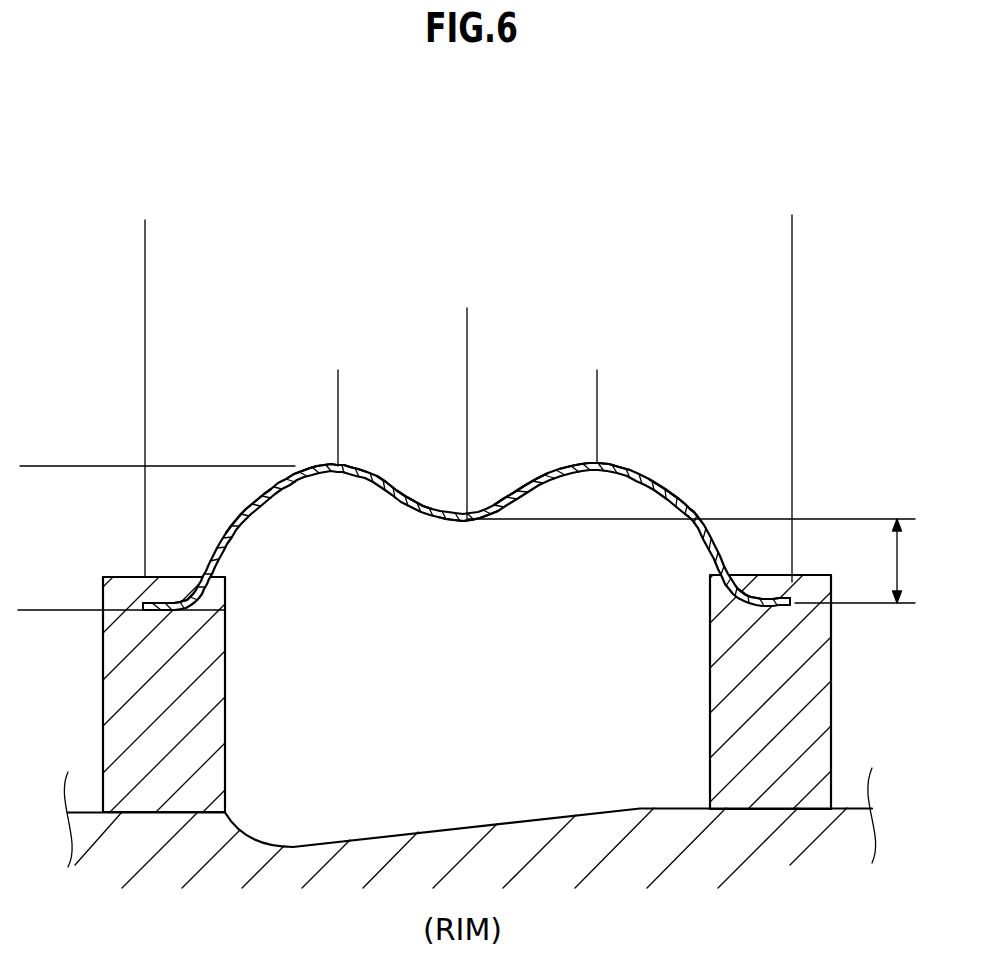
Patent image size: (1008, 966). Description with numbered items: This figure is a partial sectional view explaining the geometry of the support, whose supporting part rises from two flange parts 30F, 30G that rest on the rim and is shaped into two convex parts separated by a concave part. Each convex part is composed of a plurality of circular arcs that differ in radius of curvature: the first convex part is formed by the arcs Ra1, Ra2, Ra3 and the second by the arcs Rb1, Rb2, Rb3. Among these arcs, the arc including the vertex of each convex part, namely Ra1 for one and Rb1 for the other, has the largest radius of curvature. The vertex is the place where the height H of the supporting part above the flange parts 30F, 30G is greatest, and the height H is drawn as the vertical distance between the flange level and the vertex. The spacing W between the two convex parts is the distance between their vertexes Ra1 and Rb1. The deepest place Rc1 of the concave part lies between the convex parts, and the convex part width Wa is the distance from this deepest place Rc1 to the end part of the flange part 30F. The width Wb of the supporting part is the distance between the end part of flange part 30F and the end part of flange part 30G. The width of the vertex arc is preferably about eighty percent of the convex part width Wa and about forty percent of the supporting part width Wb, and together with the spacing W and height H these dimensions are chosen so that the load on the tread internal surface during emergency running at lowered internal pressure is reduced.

The flange part 30F is at (160, 598).
The flange part 30G is at (772, 598).
The circular arc including the vertex of the convex part Ra1 is at (333, 478).
The circular arc of the convex part Ra2 is at (253, 509).
The circular arc of the convex part Ra3 is at (407, 503).
The circular arc including the vertex of the convex part Rb1 is at (598, 478).
The circular arc of the convex part Rb2 is at (683, 509).
The circular arc of the convex part Rb3 is at (525, 503).
The deepest place of the concave part Rc1 is at (468, 525).
The height of the convex part H is at (37, 467).
The spacing between convex parts W is at (338, 390).
The convex part width Wa is at (467, 323).
The width of the supporting part Wb is at (792, 238).